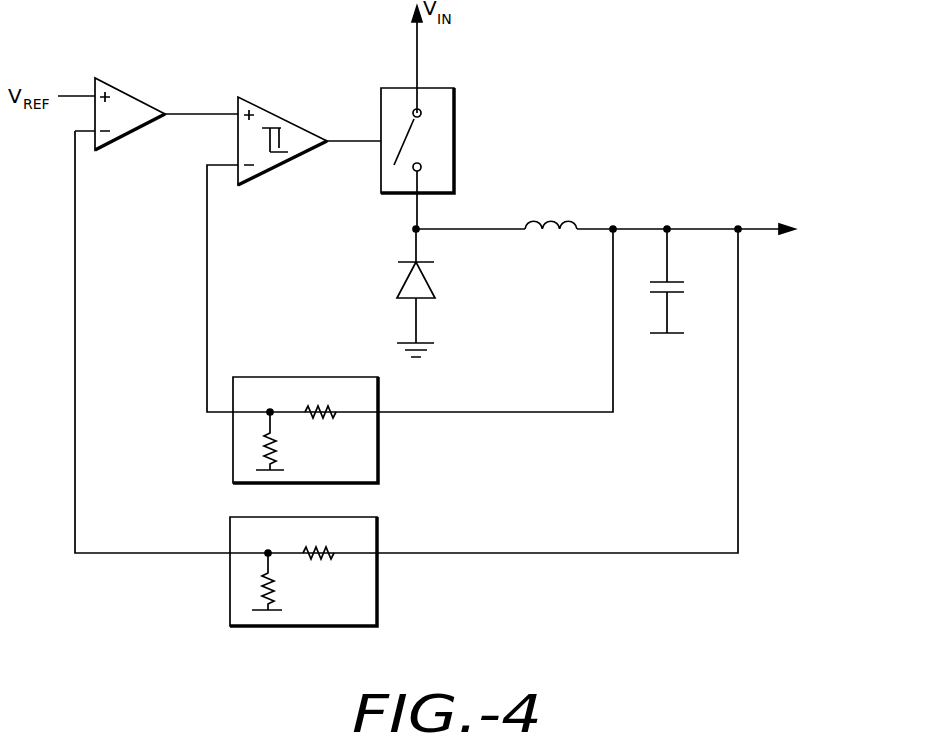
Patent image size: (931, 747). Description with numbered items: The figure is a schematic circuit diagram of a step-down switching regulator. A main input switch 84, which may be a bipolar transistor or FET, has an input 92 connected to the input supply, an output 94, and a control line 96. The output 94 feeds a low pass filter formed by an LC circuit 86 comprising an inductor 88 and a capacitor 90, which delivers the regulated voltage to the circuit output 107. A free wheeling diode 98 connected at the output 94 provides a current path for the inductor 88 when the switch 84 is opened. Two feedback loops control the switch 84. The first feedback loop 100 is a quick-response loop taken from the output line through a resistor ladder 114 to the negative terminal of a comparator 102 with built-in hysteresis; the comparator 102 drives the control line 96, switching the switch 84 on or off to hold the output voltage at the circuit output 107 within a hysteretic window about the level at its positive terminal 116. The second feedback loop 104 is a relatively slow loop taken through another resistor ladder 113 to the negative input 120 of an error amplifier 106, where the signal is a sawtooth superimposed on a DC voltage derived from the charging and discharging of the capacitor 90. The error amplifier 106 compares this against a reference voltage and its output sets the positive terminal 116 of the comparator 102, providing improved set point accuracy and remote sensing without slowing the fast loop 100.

The input switch 84 is at (467, 105).
The LC circuit 86 is at (623, 195).
The inductor 88 is at (552, 240).
The capacitor 90 is at (643, 297).
The input 92 is at (420, 62).
The output 94 is at (412, 212).
The control line 96 is at (353, 142).
The free wheeling diode 98 is at (437, 285).
The first feedback loop 100 is at (565, 425).
The comparator 102 is at (297, 100).
The second feedback loop 104 is at (748, 512).
The error amplifier 106 is at (148, 85).
The circuit output 107 is at (797, 245).
The resistor ladder 113 is at (343, 540).
The resistor ladder 114 is at (342, 467).
The positive terminal 116 is at (218, 112).
The negative input 120 is at (75, 131).